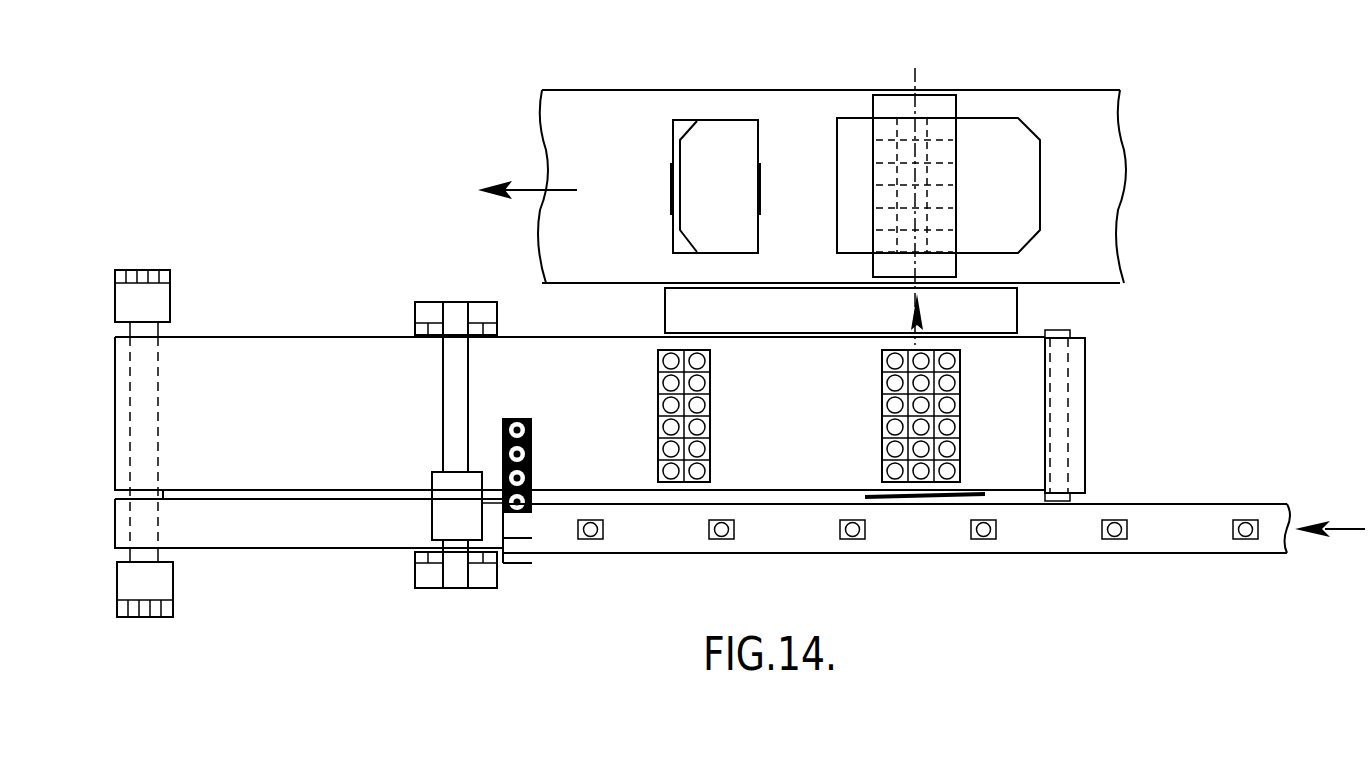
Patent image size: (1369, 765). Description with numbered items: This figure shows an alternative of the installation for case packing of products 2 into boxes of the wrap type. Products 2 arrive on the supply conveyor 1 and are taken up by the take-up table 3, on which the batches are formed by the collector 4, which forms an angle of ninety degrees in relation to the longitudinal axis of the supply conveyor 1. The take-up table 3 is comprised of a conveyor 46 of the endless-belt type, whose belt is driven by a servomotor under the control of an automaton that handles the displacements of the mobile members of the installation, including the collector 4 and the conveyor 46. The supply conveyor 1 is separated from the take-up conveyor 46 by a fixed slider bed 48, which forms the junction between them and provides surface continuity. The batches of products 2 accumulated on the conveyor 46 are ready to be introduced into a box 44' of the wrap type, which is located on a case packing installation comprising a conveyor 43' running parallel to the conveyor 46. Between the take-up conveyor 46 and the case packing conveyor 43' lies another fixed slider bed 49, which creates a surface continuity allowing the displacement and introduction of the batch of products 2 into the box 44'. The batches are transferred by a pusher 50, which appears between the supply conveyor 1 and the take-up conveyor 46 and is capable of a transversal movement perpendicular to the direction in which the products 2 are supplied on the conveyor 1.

The supply conveyor 1 is at (1205, 525).
The products 2 is at (992, 538).
The take-up table 3 is at (260, 328).
The collector 4 is at (515, 565).
The case packing conveyor 43' is at (860, 186).
The box of the wrap type 44' is at (856, 185).
The take-up conveyor 46 is at (575, 393).
The fixed slider bed 48 is at (293, 497).
The fixed slider bed 49 is at (1017, 312).
The pusher 50 is at (973, 493).